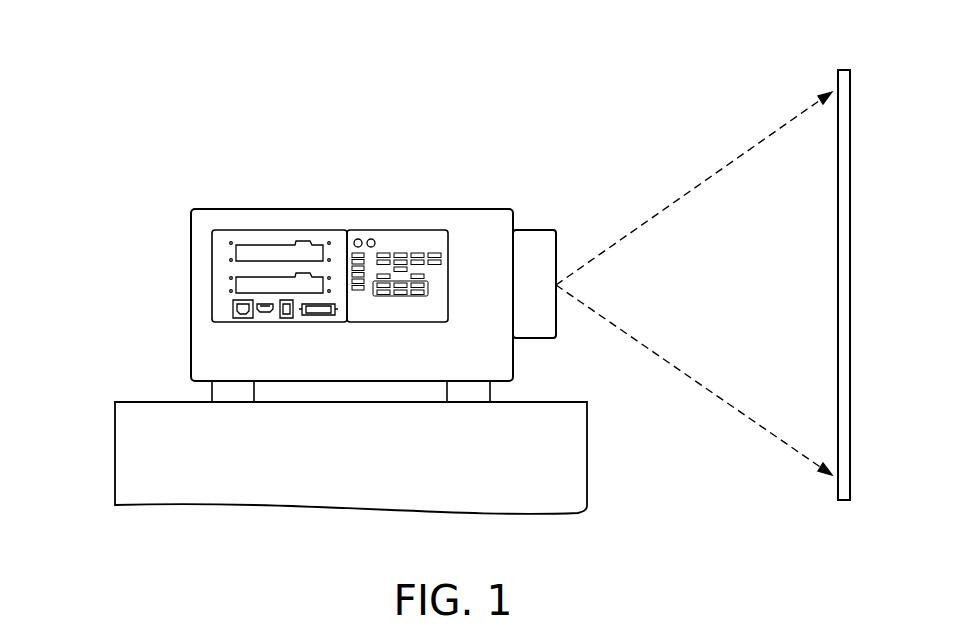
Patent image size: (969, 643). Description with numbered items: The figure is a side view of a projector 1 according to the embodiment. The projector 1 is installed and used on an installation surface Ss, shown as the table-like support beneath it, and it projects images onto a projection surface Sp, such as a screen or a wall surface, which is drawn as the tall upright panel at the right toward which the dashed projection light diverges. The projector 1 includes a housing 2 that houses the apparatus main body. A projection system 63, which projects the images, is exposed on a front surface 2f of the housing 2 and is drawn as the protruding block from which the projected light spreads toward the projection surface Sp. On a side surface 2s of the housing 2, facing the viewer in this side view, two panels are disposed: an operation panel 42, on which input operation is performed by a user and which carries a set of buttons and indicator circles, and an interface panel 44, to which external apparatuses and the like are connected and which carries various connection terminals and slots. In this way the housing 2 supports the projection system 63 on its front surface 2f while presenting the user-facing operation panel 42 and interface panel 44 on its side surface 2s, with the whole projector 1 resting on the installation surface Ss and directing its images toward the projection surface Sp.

The projector 1 is at (500, 132).
The housing 2 is at (462, 208).
The side surface 2s is at (191, 331).
The front surface 2f is at (513, 356).
The interface panel 44 is at (270, 229).
The operation panel 42 is at (378, 229).
The projection system 63 is at (536, 229).
The installation surface Ss is at (127, 400).
The projection surface Sp is at (838, 80).